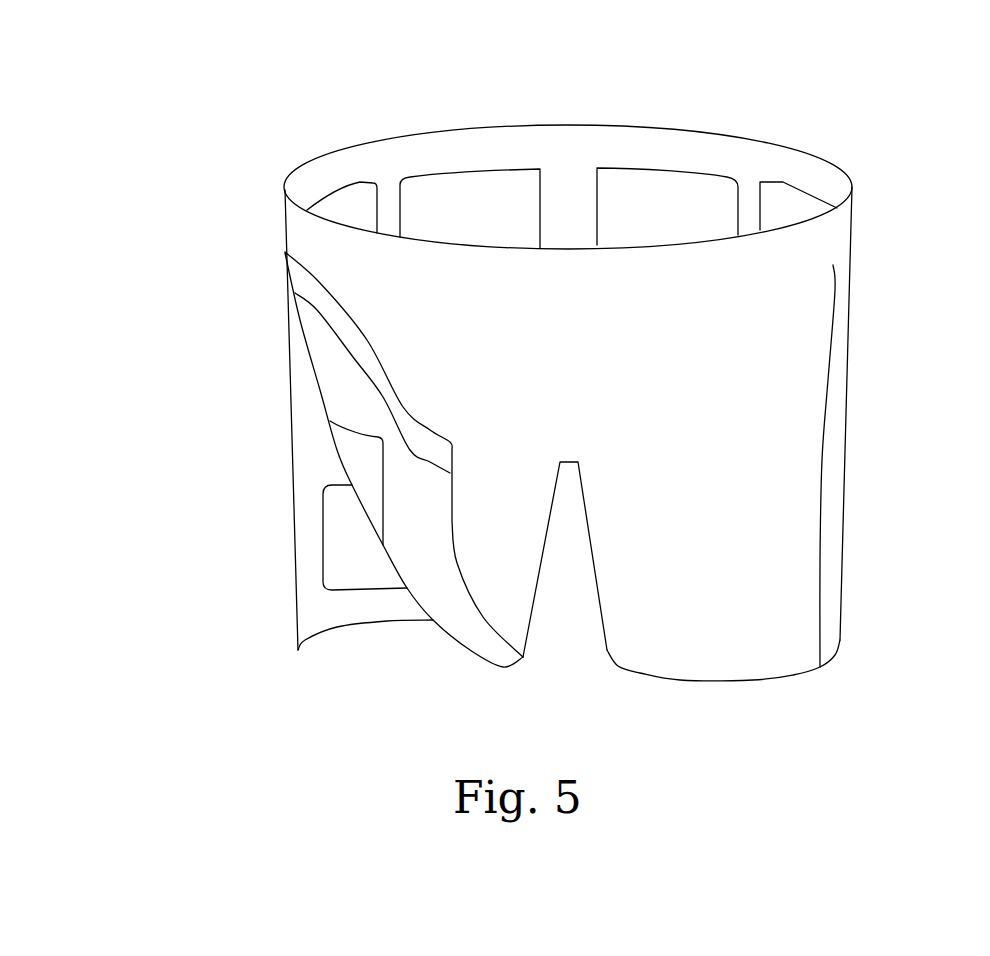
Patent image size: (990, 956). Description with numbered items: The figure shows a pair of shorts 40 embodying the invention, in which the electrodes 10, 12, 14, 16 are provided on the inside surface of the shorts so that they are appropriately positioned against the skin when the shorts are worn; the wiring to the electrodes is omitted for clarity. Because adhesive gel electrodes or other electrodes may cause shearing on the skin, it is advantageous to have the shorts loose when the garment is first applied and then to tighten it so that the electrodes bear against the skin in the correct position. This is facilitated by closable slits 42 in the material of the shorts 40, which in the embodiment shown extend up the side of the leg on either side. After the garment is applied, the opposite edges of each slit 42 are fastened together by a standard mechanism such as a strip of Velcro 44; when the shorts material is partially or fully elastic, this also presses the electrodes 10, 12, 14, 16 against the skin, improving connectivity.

The electrode 10 is at (455, 210).
The electrode 12 is at (337, 208).
The electrode 14 is at (358, 460).
The electrode 16 is at (350, 563).
The shorts 40 is at (645, 420).
The closable slit 42 is at (300, 368).
The strip of Velcro 44 is at (312, 289).